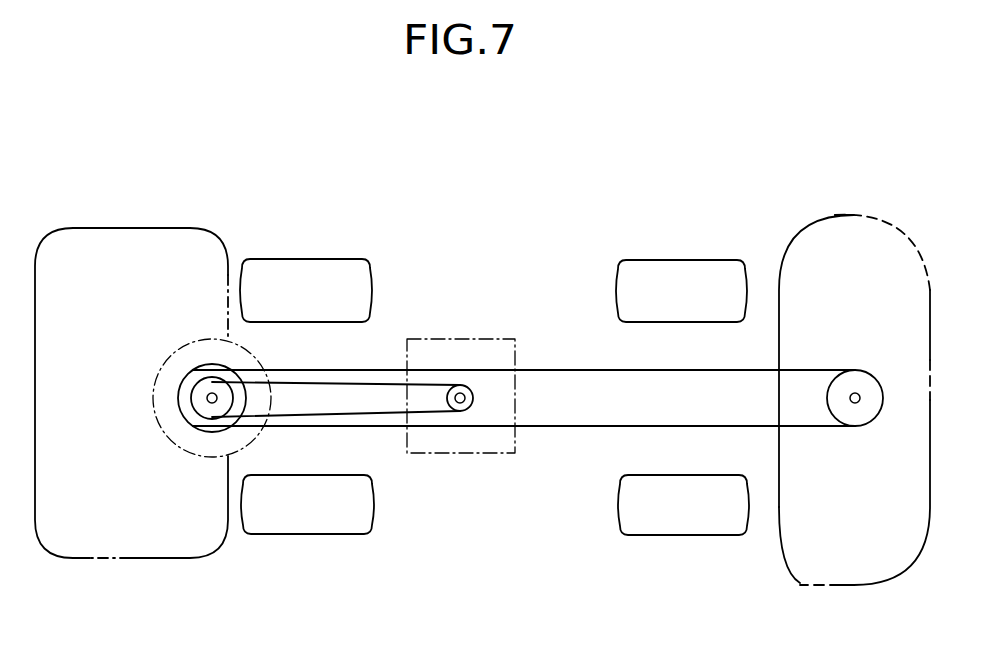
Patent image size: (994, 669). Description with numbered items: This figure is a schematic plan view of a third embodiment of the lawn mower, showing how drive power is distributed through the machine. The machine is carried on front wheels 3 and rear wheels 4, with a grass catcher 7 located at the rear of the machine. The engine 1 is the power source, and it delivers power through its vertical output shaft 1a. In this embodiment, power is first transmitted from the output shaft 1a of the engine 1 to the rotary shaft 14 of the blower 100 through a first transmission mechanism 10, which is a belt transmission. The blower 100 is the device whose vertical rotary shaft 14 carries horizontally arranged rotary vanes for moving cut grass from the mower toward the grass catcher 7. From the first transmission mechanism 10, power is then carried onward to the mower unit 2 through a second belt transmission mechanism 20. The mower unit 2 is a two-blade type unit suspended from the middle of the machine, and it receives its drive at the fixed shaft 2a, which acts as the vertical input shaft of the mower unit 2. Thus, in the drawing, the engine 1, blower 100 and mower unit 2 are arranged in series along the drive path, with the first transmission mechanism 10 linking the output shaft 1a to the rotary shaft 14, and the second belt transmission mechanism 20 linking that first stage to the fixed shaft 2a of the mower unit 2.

The engine 1 is at (481, 338).
The output shaft 1a is at (469, 406).
The mower unit 2 is at (807, 563).
The fixed shaft 2a is at (855, 404).
The front wheels 3 is at (678, 261).
The rear wheels 4 is at (313, 262).
The grass catcher 7 is at (104, 228).
The first belt transmission mechanism 10 is at (383, 418).
The rotary shaft 14 is at (212, 400).
The second belt transmission mechanism 20 is at (561, 370).
The blower 100 is at (154, 387).